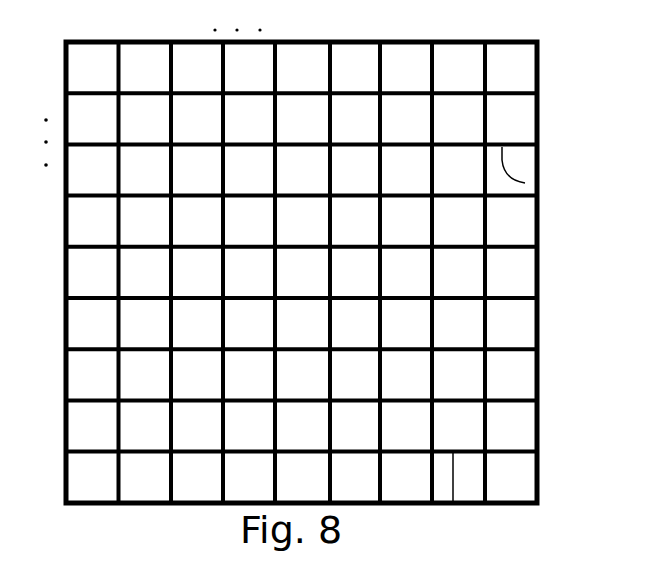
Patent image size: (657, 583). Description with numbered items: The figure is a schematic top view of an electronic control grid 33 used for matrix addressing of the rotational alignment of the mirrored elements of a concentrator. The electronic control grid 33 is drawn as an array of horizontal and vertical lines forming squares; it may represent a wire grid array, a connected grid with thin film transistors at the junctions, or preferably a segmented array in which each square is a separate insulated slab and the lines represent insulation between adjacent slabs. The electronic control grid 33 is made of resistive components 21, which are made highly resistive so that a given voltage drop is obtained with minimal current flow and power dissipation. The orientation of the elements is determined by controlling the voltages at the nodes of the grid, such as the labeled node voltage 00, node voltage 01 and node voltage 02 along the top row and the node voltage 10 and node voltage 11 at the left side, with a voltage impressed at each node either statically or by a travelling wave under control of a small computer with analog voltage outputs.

The resistive component 21 is at (537, 110).
The electronic control grid 33 is at (617, 468).
The voltage V00 00 is at (51, 51).
The voltage V01 01 is at (117, 51).
The voltage V02 02 is at (179, 51).
The voltage V10 10 is at (68, 89).
The voltage V11 11 is at (92, 68).